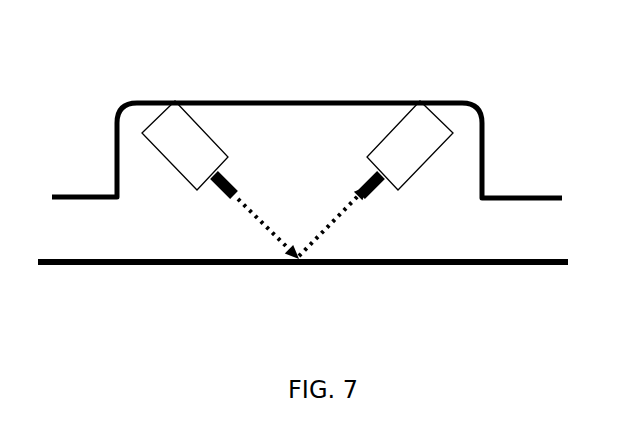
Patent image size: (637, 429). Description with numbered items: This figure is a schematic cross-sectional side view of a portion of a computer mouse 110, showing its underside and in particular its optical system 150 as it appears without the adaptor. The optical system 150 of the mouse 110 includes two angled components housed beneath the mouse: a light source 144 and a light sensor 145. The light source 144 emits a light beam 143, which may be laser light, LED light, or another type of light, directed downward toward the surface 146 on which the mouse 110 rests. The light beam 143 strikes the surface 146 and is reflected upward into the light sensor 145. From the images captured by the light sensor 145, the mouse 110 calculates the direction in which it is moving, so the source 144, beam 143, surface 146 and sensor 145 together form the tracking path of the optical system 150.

The mouse 110 is at (487, 161).
The light beam 143 is at (323, 221).
The light source 144 is at (186, 141).
The light sensor 145 is at (402, 141).
The surface 146 is at (339, 268).
The optical system 150 is at (312, 104).